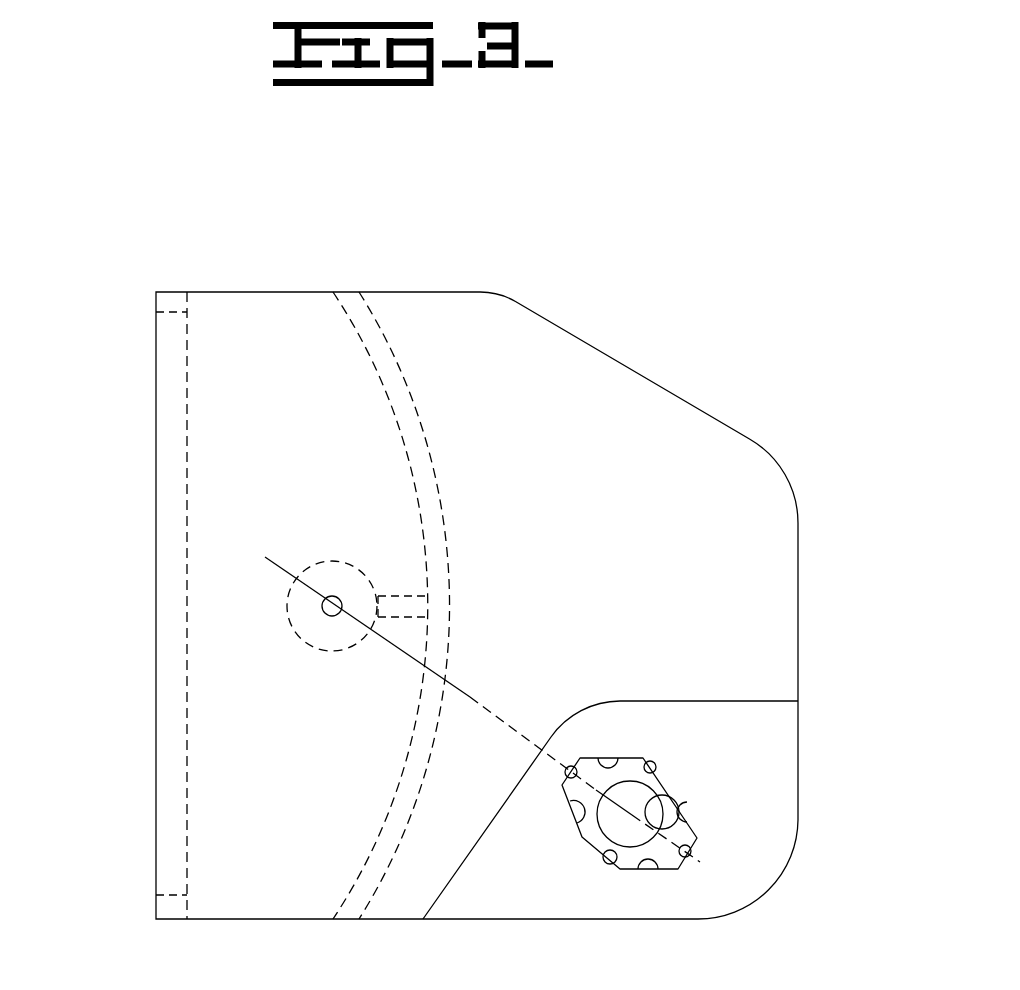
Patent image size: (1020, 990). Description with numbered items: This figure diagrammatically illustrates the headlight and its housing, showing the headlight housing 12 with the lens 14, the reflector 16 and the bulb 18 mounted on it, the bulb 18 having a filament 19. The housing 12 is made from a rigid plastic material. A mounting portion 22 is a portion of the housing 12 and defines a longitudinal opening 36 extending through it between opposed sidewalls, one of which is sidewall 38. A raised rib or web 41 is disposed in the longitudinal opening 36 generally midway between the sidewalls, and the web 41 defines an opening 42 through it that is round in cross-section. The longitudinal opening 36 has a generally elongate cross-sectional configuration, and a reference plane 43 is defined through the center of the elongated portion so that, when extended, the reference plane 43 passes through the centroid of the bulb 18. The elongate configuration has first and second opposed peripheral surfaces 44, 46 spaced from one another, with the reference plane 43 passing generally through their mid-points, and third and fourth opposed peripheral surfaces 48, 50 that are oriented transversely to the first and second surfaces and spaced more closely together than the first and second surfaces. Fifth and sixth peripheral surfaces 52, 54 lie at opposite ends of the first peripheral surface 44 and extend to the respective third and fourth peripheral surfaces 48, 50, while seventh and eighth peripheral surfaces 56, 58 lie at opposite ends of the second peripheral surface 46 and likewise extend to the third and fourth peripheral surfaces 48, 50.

The housing 12 is at (708, 625).
The lens 14 is at (170, 537).
The reflector 16 is at (405, 417).
The bulb 18 is at (332, 560).
The filament 19 is at (310, 643).
The mounting portion 22 is at (826, 786).
The longitudinal opening 36 is at (616, 828).
The sidewall 38 is at (713, 892).
The web 41 is at (675, 837).
The opening 42 is at (657, 795).
The reference plane 43 is at (470, 697).
The first peripheral surface 44 is at (576, 776).
The second peripheral surface 46 is at (678, 857).
The third peripheral surface 48 is at (612, 866).
The fourth peripheral surface 50 is at (650, 768).
The fifth peripheral surface 52 is at (576, 817).
The sixth peripheral surface 54 is at (600, 757).
The seventh peripheral surface 56 is at (658, 868).
The eighth peripheral surface 58 is at (677, 808).